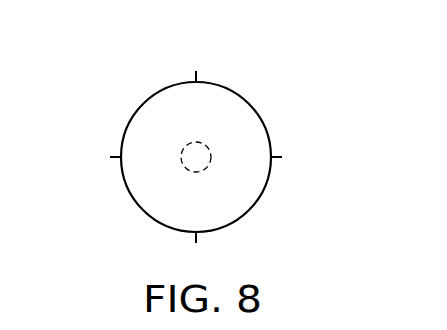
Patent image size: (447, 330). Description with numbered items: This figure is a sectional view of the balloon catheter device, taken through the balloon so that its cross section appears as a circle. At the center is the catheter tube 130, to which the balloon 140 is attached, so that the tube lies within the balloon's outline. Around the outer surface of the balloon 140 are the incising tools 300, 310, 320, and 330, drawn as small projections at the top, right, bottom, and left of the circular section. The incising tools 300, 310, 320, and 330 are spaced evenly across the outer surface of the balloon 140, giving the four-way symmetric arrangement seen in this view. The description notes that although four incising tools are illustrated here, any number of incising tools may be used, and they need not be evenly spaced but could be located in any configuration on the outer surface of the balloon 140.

The catheter tube 130 is at (196, 142).
The balloon 140 is at (155, 206).
The incising tool 300 is at (196, 72).
The incising tool 310 is at (282, 157).
The incising tool 320 is at (196, 242).
The incising tool 330 is at (112, 157).